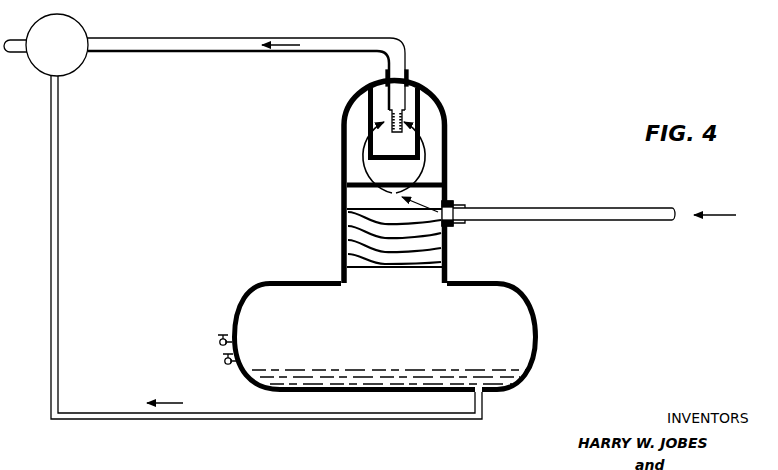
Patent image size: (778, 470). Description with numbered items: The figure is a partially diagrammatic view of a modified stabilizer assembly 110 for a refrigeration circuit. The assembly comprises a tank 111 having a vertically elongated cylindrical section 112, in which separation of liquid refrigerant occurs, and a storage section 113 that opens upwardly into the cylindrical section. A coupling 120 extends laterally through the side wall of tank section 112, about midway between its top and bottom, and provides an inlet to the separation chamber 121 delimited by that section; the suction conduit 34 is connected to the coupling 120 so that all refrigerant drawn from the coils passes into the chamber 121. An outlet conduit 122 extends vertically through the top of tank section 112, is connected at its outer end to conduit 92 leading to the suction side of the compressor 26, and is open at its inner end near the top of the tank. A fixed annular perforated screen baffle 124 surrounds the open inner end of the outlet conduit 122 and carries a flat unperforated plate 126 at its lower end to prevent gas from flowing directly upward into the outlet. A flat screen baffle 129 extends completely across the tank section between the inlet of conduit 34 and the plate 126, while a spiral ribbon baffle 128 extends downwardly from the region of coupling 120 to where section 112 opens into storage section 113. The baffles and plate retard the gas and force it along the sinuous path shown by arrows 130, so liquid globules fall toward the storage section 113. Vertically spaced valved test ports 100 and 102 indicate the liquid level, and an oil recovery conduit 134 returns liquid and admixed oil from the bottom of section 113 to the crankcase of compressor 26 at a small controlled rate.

The compressor 26 is at (88, 25).
The conduit 92 is at (216, 49).
The outlet conduit 122 is at (396, 95).
The annular perforated screen baffle 124 is at (421, 120).
The arrows 130 is at (368, 155).
The flat sided unperforated plate 126 is at (378, 160).
The flat screen baffle 129 is at (424, 184).
The separation chamber 121 is at (375, 206).
The coupling 120 is at (455, 204).
The suction conduit 34 is at (613, 209).
The spiral ribbon baffle 128 is at (362, 243).
The vertically elongated cylindrical section 112 is at (446, 257).
The tank 111 is at (504, 281).
The stabilizer assembly 110 is at (418, 325).
The storage section 113 is at (540, 334).
The upper valved test port 100 is at (222, 336).
The lower valved test port 102 is at (226, 366).
The oil recovery conduit 134 is at (293, 421).